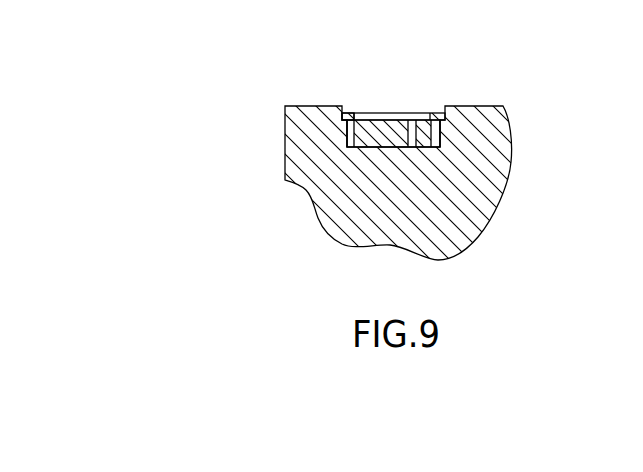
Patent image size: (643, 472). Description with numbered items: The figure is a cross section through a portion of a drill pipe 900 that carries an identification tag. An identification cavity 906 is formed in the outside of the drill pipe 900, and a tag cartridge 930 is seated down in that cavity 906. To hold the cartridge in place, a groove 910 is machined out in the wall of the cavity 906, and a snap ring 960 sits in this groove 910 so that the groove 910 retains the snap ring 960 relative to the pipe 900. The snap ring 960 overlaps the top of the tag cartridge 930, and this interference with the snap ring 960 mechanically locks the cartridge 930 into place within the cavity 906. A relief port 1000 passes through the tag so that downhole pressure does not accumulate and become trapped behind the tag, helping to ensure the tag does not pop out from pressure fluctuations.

The drill pipe 900 is at (320, 106).
The identification cavity 906 is at (348, 138).
The groove 910 is at (449, 137).
The tag cartridge 930 is at (392, 158).
The snap ring 960 is at (353, 100).
The relief port 1000 is at (436, 111).